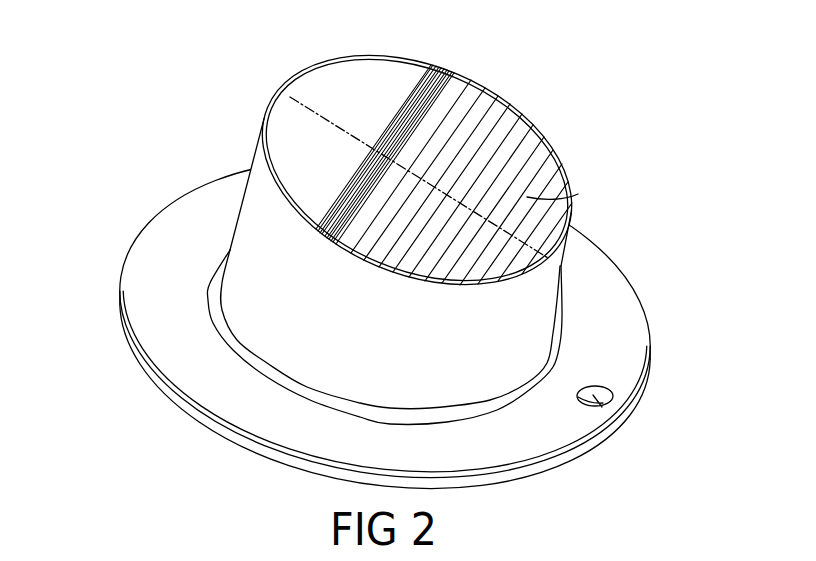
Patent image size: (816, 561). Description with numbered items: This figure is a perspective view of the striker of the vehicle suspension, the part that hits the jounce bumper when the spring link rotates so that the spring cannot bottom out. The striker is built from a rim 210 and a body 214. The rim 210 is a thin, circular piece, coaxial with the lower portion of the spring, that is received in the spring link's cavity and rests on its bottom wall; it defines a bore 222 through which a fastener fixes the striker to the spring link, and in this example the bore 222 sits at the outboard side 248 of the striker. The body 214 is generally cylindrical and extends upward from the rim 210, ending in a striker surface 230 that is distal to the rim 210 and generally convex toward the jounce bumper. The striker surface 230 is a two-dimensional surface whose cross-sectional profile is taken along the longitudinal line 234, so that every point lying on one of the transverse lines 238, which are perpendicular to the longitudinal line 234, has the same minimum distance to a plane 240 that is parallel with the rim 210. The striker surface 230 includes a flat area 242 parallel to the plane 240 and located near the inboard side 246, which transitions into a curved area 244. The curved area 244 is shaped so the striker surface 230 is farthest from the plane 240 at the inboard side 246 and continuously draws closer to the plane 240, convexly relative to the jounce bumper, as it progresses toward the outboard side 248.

The rim 210 is at (607, 332).
The body 214 is at (253, 227).
The bore 222 is at (593, 393).
The striker surface 230 is at (531, 148).
The longitudinal line 234 is at (330, 115).
The lines 238 is at (578, 194).
The plane 240 is at (180, 307).
The flat area 242 is at (398, 73).
The curved area 244 is at (497, 107).
The inboard side 246 is at (282, 98).
The outboard side 248 is at (563, 263).